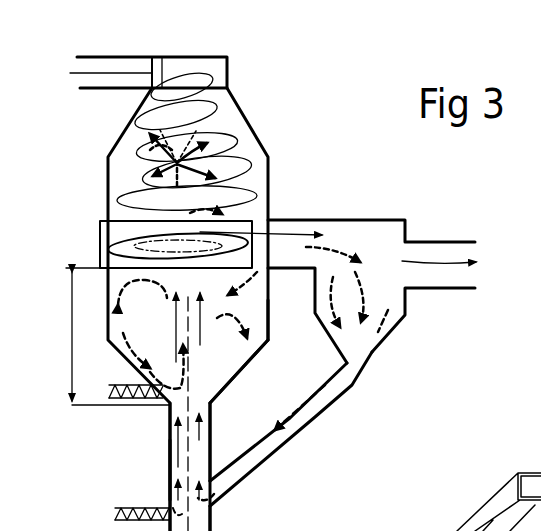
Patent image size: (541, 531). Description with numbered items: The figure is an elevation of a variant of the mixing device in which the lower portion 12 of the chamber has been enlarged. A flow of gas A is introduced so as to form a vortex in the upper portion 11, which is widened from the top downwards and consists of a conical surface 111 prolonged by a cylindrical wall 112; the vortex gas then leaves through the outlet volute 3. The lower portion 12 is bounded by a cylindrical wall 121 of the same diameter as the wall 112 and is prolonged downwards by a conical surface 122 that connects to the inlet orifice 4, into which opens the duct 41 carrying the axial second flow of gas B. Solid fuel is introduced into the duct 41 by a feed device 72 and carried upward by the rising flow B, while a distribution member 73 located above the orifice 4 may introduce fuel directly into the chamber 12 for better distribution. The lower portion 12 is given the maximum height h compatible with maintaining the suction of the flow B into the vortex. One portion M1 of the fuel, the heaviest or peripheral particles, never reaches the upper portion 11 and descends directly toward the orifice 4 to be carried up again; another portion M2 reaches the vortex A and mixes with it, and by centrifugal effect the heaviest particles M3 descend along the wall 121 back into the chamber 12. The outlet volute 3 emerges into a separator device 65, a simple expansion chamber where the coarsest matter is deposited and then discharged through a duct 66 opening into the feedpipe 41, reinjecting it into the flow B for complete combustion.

The flow of gas A is at (180, 75).
The second flow of gas B is at (175, 325).
The height h is at (110, 336).
The portion of the fuel M1 is at (147, 278).
The portion of the fuel M2 is at (150, 147).
The heaviest particles M3 is at (100, 247).
The outlet volute 3 is at (288, 218).
The inlet orifice 4 is at (212, 413).
The upper portion 11 is at (122, 164).
The lower portion 12 is at (233, 348).
The duct 41 is at (168, 463).
The separator device 65 is at (347, 226).
The duct 66 is at (306, 428).
The feed device 72 is at (145, 501).
The distribution member 73 is at (127, 400).
The conical surface 111 is at (134, 136).
The cylindrical wall 112 is at (108, 186).
The cylindrical wall 121 is at (268, 307).
The conical surface 122 is at (233, 382).